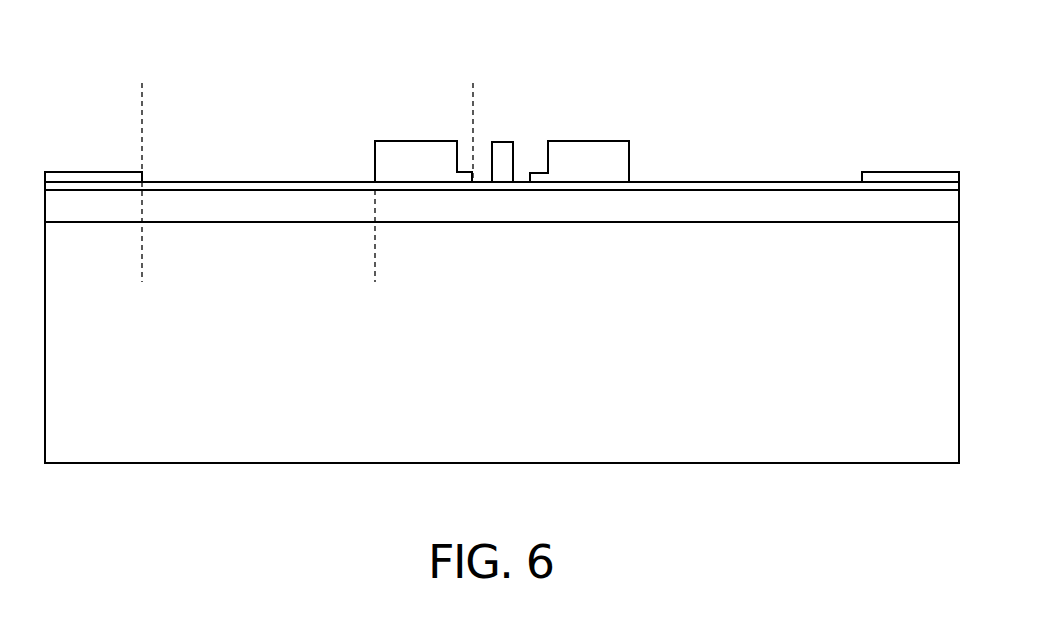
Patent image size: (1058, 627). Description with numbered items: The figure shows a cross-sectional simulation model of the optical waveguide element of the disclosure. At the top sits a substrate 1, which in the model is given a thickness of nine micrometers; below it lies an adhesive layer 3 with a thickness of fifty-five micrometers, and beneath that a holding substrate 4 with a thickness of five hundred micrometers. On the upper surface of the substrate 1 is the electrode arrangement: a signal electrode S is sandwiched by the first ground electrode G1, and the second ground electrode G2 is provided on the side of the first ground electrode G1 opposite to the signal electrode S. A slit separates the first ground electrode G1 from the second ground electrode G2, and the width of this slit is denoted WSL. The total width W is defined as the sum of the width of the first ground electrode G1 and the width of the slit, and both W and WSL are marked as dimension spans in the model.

The substrate 1 is at (642, 190).
The adhesive layer 3 is at (713, 205).
The holding substrate 4 is at (725, 392).
The first ground electrode G1 is at (423, 174).
The second ground electrode G2 is at (70, 177).
The signal electrode S is at (498, 146).
The total width W is at (461, 98).
The width of slit WSL is at (363, 263).